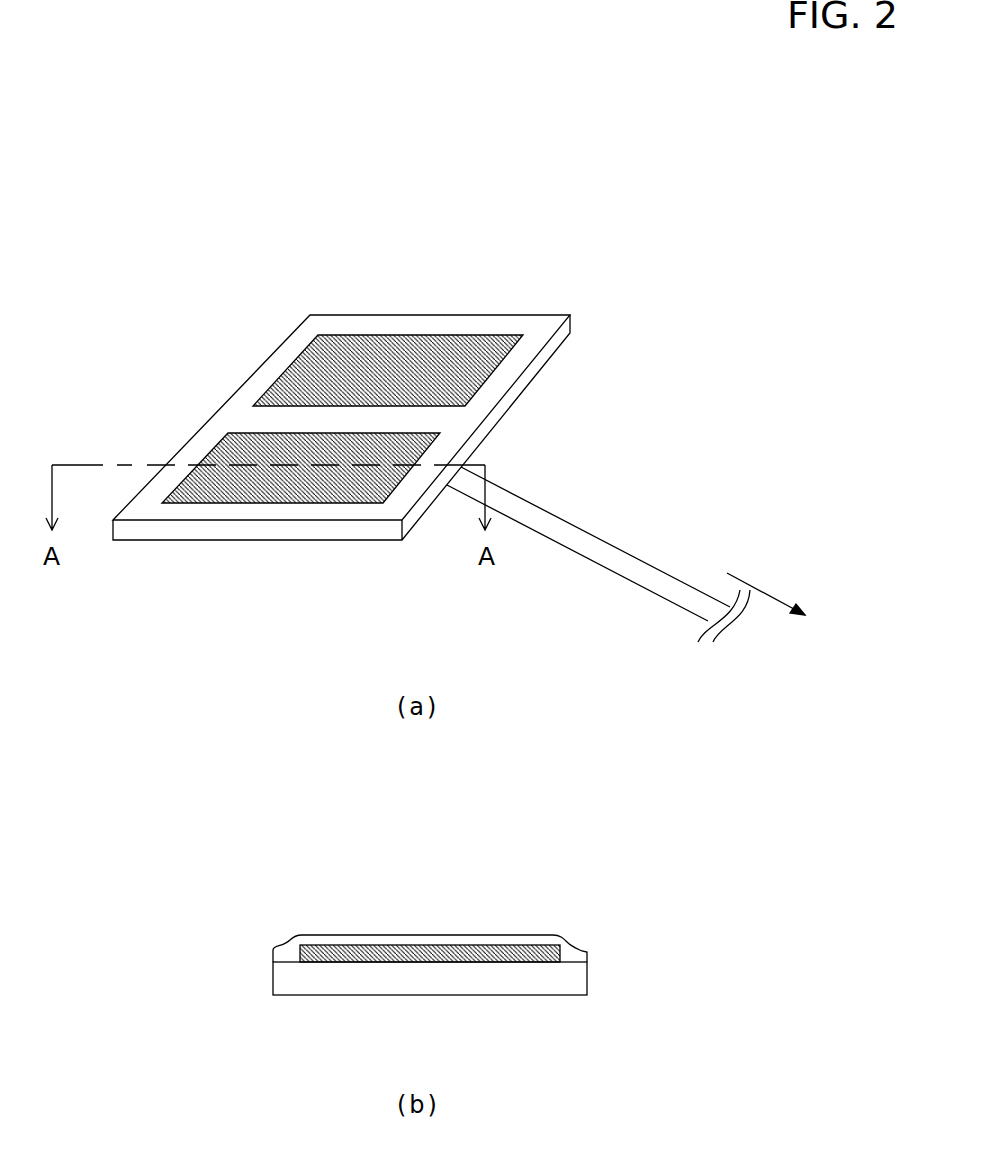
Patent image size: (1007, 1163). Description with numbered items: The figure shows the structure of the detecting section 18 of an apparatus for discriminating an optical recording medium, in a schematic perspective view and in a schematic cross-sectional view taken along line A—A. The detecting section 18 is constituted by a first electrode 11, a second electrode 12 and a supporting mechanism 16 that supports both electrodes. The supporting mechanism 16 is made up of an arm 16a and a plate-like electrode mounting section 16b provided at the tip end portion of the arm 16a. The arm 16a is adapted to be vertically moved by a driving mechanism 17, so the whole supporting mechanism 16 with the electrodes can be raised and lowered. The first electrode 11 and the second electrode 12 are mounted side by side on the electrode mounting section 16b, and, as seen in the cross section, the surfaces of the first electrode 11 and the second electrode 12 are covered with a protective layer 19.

The first electrode 11 is at (235, 447).
The second electrode 12 is at (327, 348).
The supporting mechanism 16 is at (700, 393).
The arm 16a is at (545, 520).
The electrode mounting section 16b is at (536, 375).
The driving mechanism 17 is at (808, 619).
The detecting section 18 is at (623, 297).
The protective layer 19 is at (572, 952).